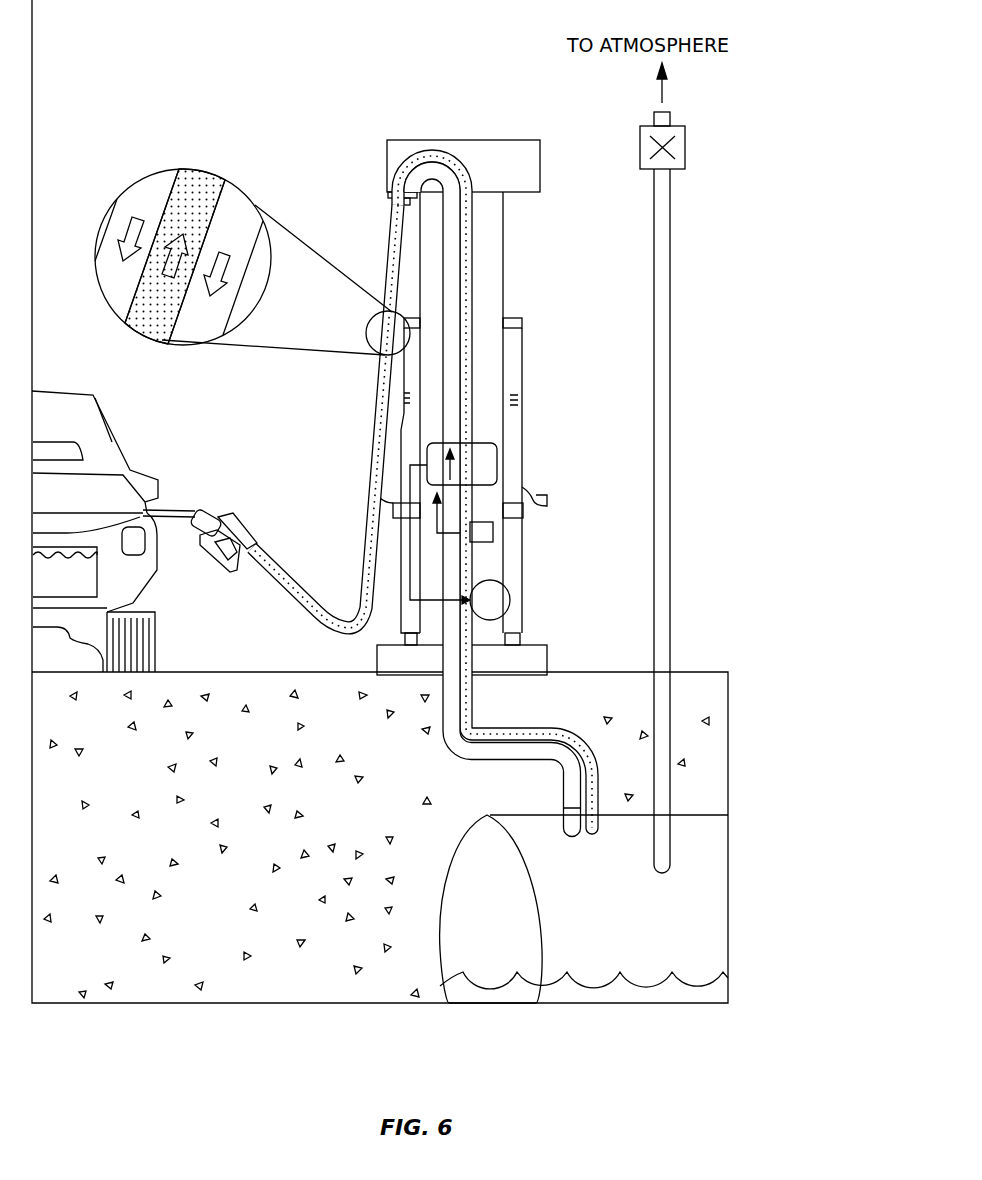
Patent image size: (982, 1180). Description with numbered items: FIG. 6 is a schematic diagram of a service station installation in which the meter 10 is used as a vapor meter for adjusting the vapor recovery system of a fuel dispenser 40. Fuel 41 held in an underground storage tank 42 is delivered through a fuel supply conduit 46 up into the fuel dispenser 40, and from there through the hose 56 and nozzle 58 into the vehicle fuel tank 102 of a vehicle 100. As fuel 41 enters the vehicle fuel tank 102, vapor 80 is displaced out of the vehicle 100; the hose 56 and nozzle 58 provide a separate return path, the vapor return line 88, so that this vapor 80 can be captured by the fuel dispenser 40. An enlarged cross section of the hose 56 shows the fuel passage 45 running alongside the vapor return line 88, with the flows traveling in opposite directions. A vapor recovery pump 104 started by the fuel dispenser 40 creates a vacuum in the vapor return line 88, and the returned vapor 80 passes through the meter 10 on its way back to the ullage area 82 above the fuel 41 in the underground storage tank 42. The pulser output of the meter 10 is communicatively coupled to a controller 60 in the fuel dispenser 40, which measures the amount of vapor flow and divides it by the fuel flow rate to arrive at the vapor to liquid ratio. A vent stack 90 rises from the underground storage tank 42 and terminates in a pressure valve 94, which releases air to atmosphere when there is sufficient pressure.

The meter 10 is at (487, 538).
The fuel dispenser 40 is at (471, 128).
The fuel 41 is at (713, 995).
The underground storage tank 42 is at (463, 838).
The liquid fuel passage 45 is at (160, 190).
The fuel supply conduit 46 is at (453, 750).
The hose 56 is at (118, 197).
The nozzle 58 is at (223, 510).
The controller 60 is at (487, 462).
The vapor 80 is at (121, 319).
The ullage area 82 is at (713, 857).
The vapor return line 88 is at (223, 200).
The vent stack 90 is at (671, 292).
The pressure valve 94 is at (686, 138).
The vehicle 100 is at (78, 432).
The vehicle fuel tank 102 is at (79, 588).
The vapor recovery pump 104 is at (495, 600).